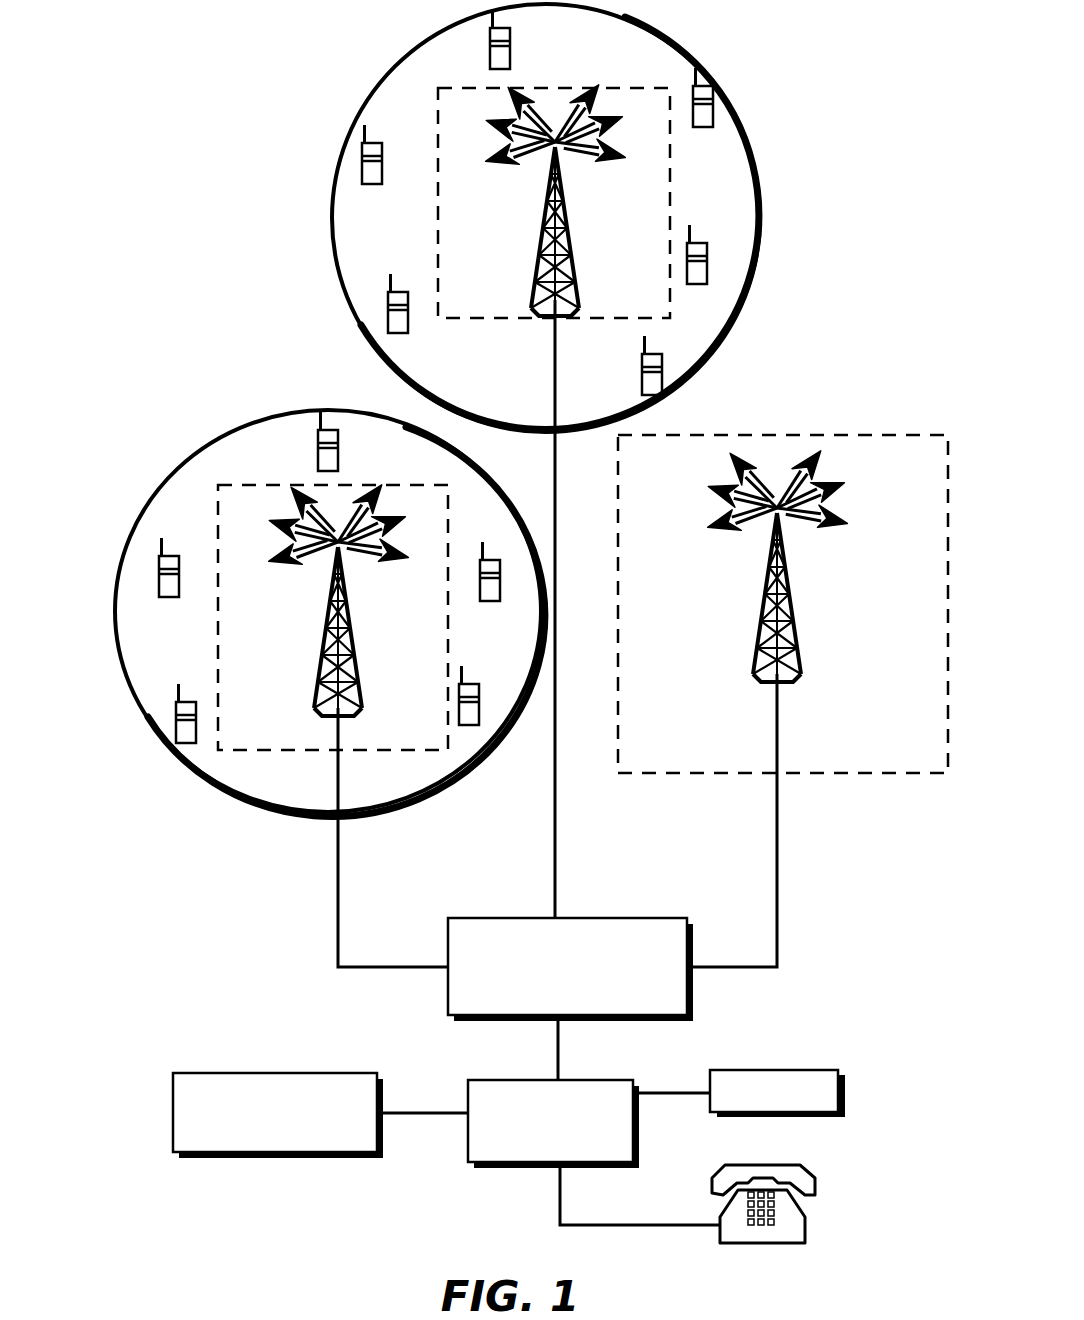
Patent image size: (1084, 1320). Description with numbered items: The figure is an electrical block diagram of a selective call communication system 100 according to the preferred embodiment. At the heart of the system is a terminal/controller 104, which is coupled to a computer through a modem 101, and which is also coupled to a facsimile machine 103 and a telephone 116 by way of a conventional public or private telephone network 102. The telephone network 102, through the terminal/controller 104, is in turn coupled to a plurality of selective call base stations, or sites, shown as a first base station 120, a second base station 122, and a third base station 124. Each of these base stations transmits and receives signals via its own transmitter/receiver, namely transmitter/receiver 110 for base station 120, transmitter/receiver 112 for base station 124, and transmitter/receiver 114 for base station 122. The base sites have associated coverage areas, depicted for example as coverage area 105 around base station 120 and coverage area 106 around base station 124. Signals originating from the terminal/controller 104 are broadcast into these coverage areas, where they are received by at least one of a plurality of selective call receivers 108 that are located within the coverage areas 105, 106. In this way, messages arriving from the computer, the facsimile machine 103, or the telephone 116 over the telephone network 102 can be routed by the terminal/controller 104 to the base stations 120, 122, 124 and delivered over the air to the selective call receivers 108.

The selective call communication system 100 is at (230, 28).
The modem 101 is at (283, 1073).
The telephone network 102 is at (468, 1130).
The facsimile (FAX) machine 103 is at (738, 1070).
The terminal/controller 104 is at (447, 990).
The coverage area 105 is at (113, 653).
The coverage area 106 is at (333, 242).
The selective call receivers 108 is at (382, 160).
The transmitter/receiver 110 is at (325, 604).
The transmitter/receiver 112 is at (568, 232).
The transmitter/receiver 114 is at (787, 548).
The telephone 116 is at (810, 1170).
The selective call base station 120 is at (260, 752).
The selective call base station 122 is at (808, 435).
The selective call base station 124 is at (551, 88).